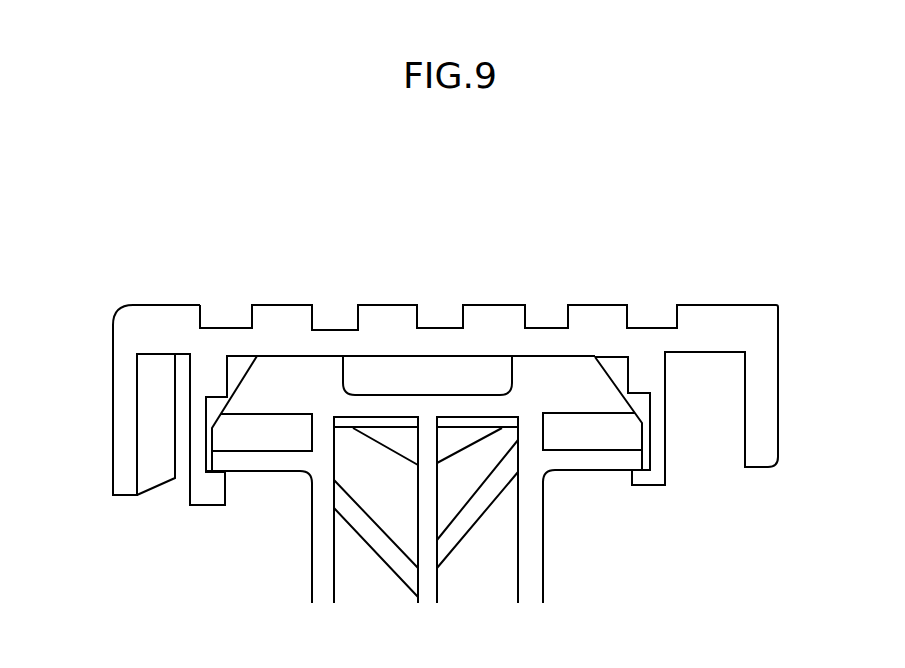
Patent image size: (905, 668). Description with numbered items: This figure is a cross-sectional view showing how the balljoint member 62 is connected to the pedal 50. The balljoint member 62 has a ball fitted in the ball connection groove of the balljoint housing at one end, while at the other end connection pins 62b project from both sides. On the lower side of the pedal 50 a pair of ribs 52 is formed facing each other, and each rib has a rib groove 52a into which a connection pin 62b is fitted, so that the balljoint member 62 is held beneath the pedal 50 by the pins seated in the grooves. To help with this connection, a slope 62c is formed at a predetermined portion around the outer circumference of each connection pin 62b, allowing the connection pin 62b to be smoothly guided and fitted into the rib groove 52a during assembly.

The pedal 50 is at (411, 300).
The ribs 52 is at (197, 430).
The rib groove 52a is at (207, 440).
The balljoint member 62 is at (532, 583).
The connection pins 62b is at (295, 383).
The slope 62c is at (245, 355).